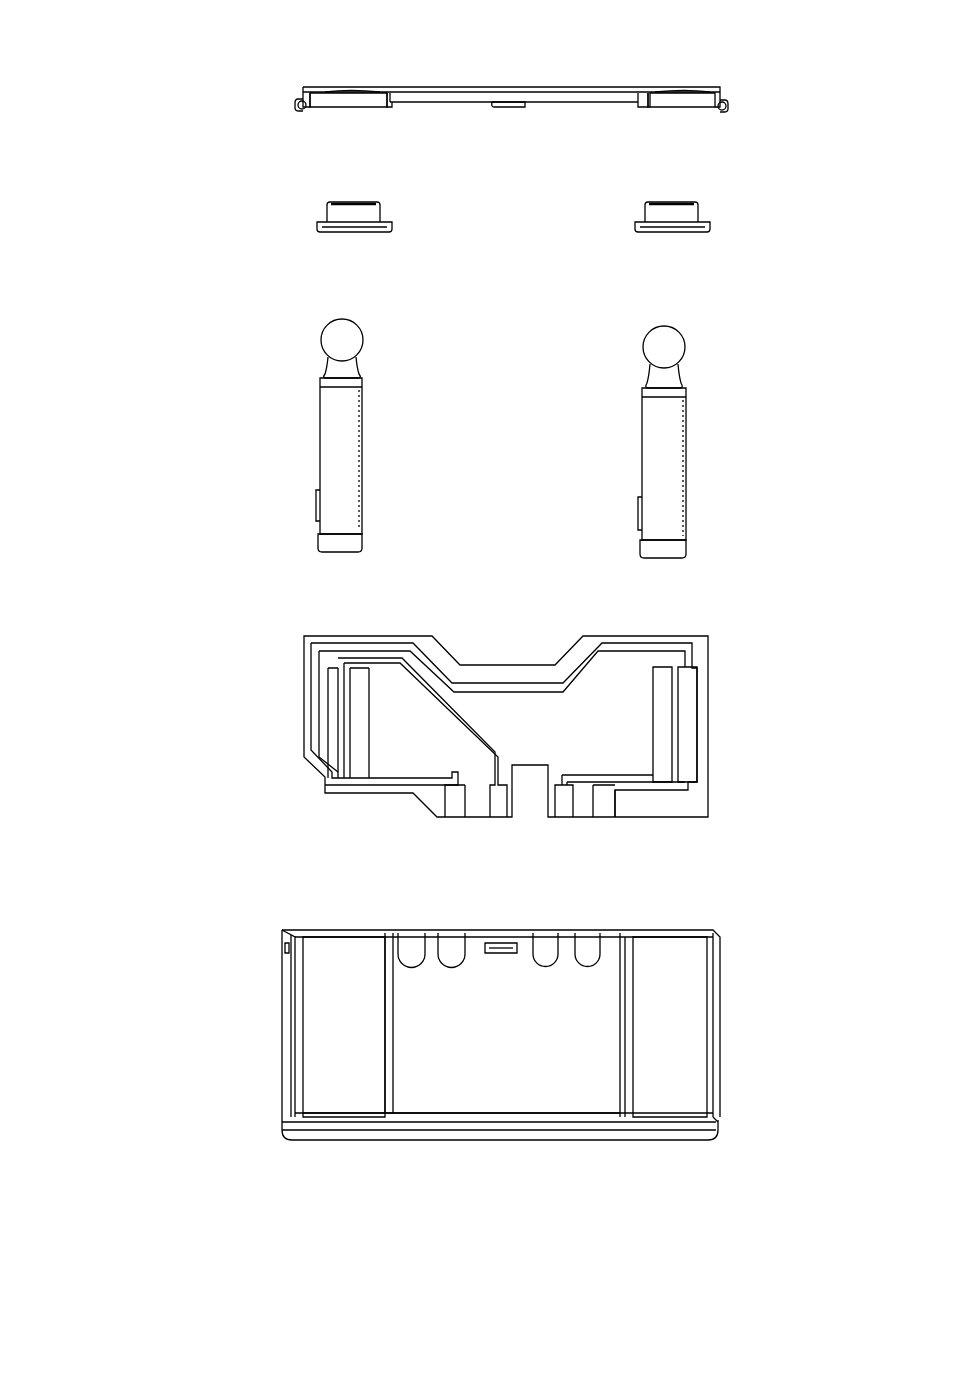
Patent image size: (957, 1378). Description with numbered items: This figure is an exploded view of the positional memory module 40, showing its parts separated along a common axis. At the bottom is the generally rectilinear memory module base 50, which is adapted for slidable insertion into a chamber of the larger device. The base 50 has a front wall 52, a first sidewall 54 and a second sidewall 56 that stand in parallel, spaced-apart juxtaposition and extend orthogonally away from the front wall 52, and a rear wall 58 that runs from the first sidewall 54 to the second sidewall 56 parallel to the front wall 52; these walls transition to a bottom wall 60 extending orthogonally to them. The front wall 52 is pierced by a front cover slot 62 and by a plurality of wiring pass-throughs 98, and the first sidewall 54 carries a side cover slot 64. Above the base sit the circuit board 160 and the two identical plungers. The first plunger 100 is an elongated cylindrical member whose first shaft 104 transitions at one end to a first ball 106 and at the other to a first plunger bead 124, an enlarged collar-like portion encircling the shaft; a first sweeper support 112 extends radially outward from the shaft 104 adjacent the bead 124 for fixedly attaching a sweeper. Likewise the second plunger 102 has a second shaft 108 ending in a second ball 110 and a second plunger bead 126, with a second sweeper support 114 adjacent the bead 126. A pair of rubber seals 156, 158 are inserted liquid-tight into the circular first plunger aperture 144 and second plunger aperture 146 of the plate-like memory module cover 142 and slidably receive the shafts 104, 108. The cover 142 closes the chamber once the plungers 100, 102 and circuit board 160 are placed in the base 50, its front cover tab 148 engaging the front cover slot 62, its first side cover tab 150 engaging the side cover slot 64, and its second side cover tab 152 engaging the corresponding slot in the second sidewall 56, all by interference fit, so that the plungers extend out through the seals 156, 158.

The positional memory module 40 is at (192, 731).
The memory module base 50 is at (655, 1096).
The front wall 52 is at (485, 1083).
The first sidewall 54 is at (287, 1015).
The second sidewall 56 is at (715, 931).
The rear wall 58 is at (338, 931).
The bottom wall 60 is at (570, 1142).
The front cover slot 62 is at (498, 942).
The side cover slot 64 is at (284, 953).
The wiring pass-throughs 98 is at (421, 949).
The first plunger 100 is at (312, 449).
The second plunger 102 is at (687, 528).
The first shaft 104 is at (338, 398).
The first ball 106 is at (335, 337).
The second shaft 108 is at (674, 406).
The second pin ball head 110 is at (678, 341).
The first sweeper support 112 is at (318, 500).
The second sweeper support 114 is at (638, 509).
The first plunger bead 124 is at (352, 541).
The second plunger bead 126 is at (650, 551).
The memory module cover 142 is at (464, 86).
The first plunger aperture 144 is at (350, 92).
The second plunger aperture 146 is at (673, 92).
The front cover tab 148 is at (503, 108).
The first side cover tab 150 is at (295, 104).
The second side cover tab 152 is at (730, 105).
The rubber seal 156 is at (343, 213).
The rubber seal 158 is at (690, 213).
The circuit board 160 is at (303, 655).